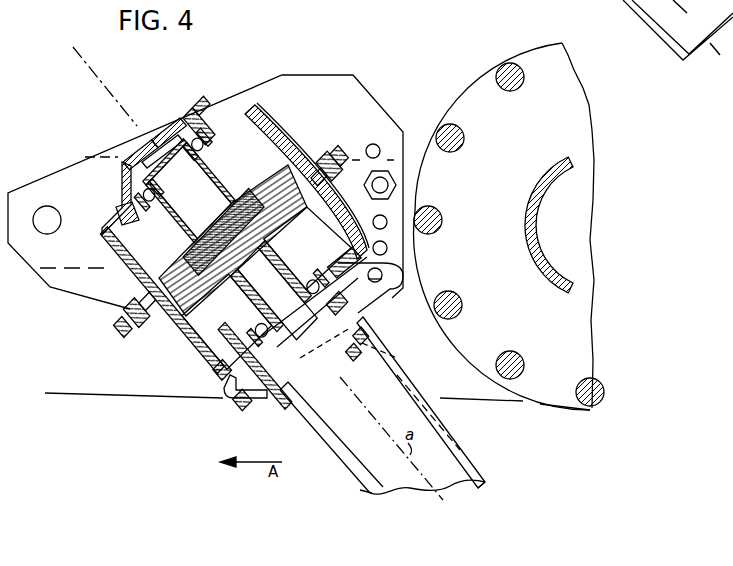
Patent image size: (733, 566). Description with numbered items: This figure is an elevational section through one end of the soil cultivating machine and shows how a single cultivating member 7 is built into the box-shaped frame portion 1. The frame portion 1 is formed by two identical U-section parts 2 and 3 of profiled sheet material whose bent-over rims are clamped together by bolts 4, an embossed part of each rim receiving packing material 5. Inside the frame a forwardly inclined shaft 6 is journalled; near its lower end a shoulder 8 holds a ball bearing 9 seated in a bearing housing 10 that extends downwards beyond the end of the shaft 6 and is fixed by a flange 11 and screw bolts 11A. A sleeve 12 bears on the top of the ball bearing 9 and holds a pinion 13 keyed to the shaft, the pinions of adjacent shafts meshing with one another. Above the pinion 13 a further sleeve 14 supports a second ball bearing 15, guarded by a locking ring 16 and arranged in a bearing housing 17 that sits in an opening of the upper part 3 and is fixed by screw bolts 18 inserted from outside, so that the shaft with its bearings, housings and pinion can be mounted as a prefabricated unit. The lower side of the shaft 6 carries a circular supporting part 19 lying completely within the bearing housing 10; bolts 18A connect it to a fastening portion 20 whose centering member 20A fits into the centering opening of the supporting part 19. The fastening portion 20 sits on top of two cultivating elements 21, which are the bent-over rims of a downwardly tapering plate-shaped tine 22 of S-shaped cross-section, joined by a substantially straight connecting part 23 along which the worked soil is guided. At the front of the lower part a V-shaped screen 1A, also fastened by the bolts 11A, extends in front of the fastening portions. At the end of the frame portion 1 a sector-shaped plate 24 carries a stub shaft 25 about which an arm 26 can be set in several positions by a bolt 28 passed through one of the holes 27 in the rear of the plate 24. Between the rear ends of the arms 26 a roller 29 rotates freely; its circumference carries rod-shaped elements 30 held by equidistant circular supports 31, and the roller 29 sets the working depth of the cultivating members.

The box-shaped frame portion 1 is at (170, 338).
The screen 1A is at (230, 398).
The part 2 is at (333, 200).
The part 3 is at (282, 134).
The bolts 4 is at (320, 157).
The packing material 5 is at (353, 152).
The shaft 6 is at (228, 198).
The cultivating member 7 is at (376, 403).
The shoulder 8 is at (300, 322).
The ball bearing 9 is at (300, 296).
The bearing housing 10 is at (233, 322).
The flange 11 is at (208, 370).
The screw bolts 11A is at (390, 288).
The sleeve 12 is at (281, 260).
The pinion 13 is at (287, 221).
The sleeve 14 is at (184, 235).
The ball bearing 15 is at (128, 190).
The locking ring 16 is at (128, 150).
The bearing housing 17 is at (178, 116).
The screw bolts 18 is at (229, 116).
The bolts 18A is at (338, 365).
The supporting part 19 is at (356, 306).
The fastening portion 20 is at (372, 343).
The centering member 20A is at (382, 360).
The cultivating elements 21 is at (320, 432).
The plate-shaped tine 22 is at (350, 477).
The connecting part 23 is at (447, 463).
The sector-shaped plate 24 is at (310, 80).
The stub shaft 25 is at (47, 234).
The arm 26 is at (412, 168).
The holes 27 is at (403, 250).
The bolt 28 is at (396, 186).
The roller 29 is at (528, 48).
The rod-shaped elements 30 is at (530, 110).
The circular supports 31 is at (550, 402).